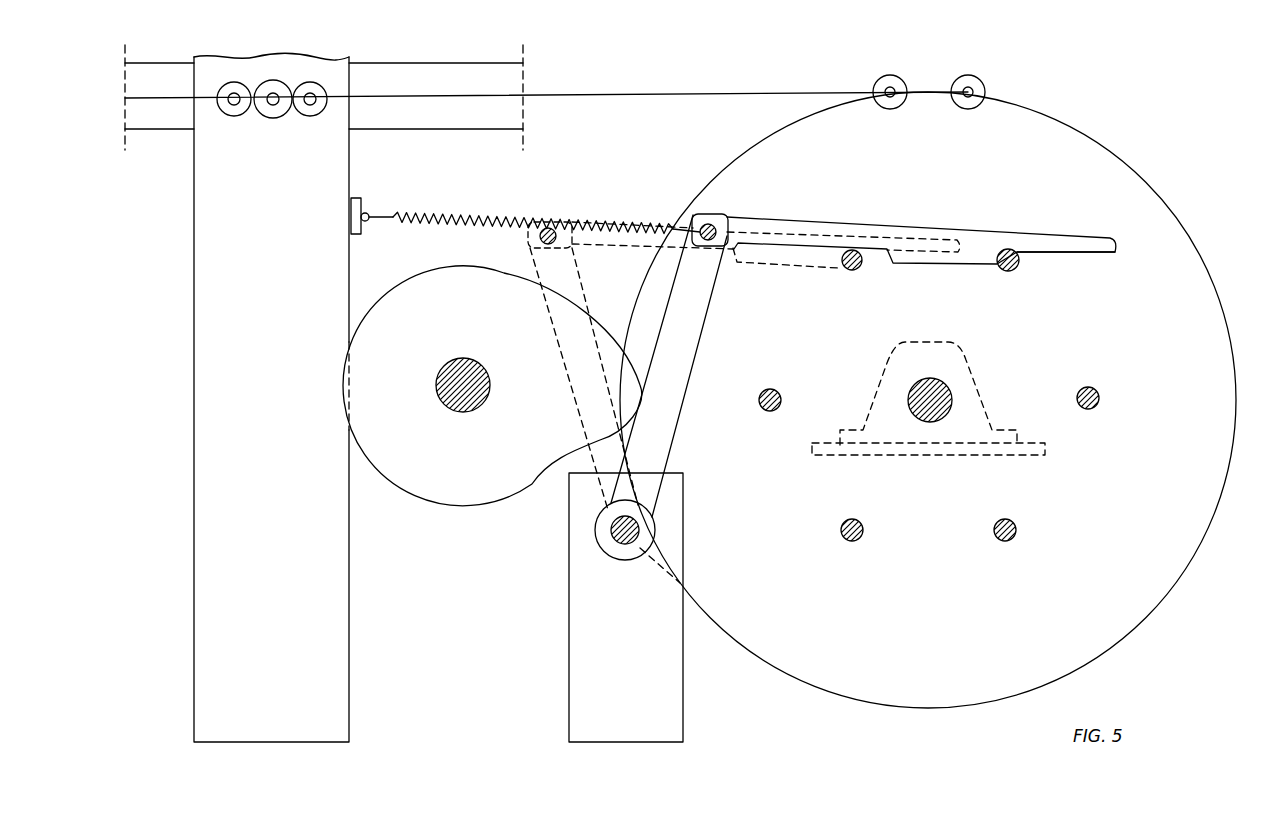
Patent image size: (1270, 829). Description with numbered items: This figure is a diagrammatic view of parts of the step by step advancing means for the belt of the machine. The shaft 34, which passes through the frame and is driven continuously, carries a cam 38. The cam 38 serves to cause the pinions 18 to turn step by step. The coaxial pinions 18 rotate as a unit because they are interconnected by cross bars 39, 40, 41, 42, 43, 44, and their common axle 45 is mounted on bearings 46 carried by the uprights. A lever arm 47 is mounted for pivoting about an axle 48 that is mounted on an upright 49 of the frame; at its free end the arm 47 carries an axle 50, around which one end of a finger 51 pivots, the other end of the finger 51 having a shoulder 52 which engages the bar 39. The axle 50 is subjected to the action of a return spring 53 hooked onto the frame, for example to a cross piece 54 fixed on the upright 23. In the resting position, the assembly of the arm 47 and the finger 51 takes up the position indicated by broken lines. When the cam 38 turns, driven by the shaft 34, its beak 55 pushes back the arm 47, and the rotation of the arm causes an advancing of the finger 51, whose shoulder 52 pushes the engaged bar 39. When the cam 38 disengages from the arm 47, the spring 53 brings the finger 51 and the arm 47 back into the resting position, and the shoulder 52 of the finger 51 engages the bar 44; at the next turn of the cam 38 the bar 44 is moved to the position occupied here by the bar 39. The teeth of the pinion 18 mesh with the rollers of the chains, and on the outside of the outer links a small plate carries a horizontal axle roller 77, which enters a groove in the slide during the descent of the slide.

The pinion 18 is at (852, 688).
The upright 23 is at (196, 344).
The shaft 34 is at (478, 393).
The cam 38 is at (461, 498).
The cross bar 39 is at (1019, 262).
The cross bar 40 is at (1097, 406).
The cross bar 41 is at (1013, 538).
The cross bar 42 is at (860, 538).
The cross bar 43 is at (778, 408).
The cross bar 44 is at (860, 266).
The axle 45 is at (930, 392).
The bearing 46 is at (975, 407).
The lever arm 47 is at (688, 333).
The axle 48 is at (622, 557).
The upright 49 is at (577, 650).
The axle 50 is at (710, 226).
The finger 51 is at (970, 238).
The shoulder 52 is at (998, 256).
The return spring 53 is at (470, 218).
The cross piece 54 is at (360, 213).
The beak 55 is at (603, 432).
The roller 77 is at (273, 108).